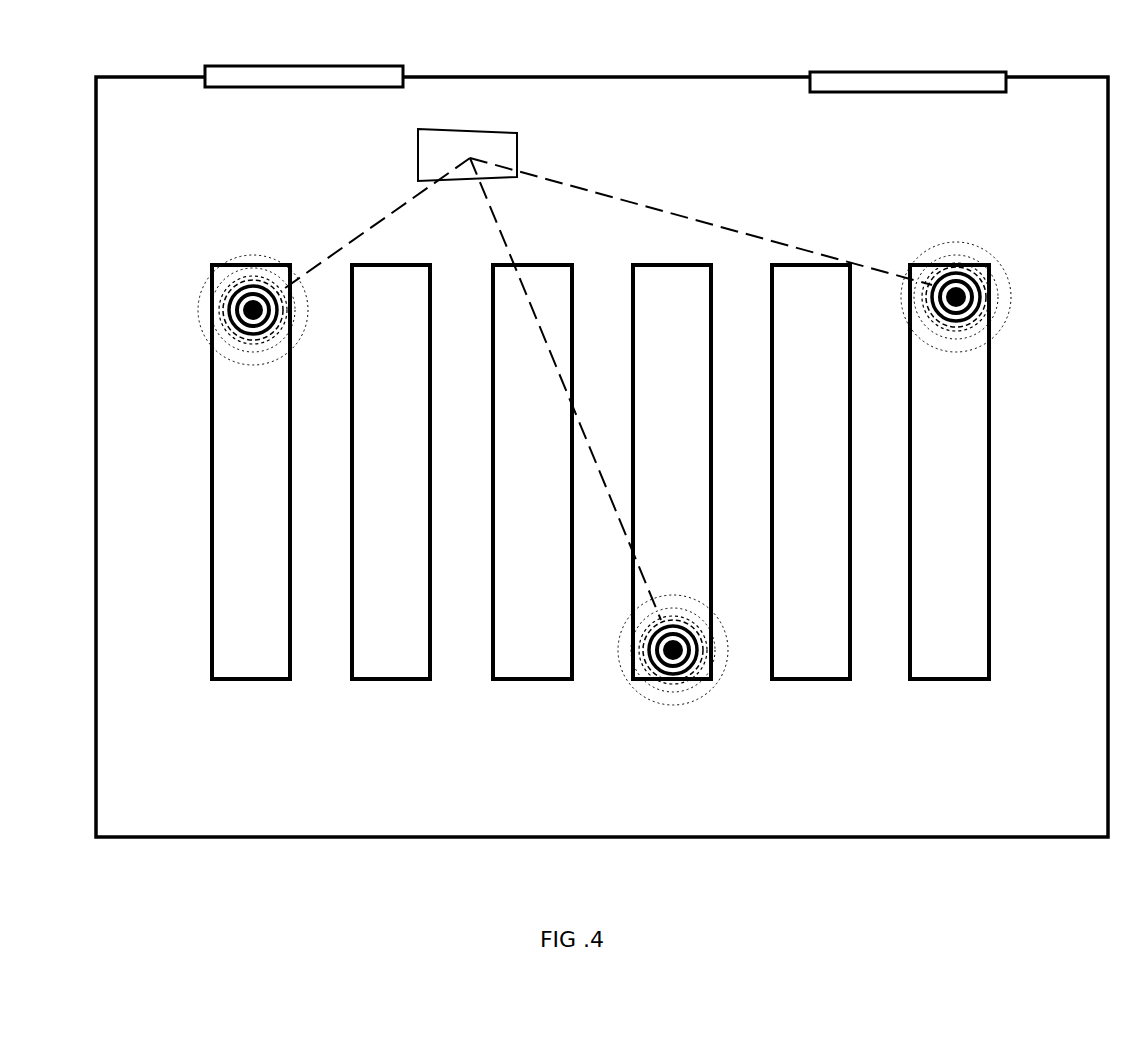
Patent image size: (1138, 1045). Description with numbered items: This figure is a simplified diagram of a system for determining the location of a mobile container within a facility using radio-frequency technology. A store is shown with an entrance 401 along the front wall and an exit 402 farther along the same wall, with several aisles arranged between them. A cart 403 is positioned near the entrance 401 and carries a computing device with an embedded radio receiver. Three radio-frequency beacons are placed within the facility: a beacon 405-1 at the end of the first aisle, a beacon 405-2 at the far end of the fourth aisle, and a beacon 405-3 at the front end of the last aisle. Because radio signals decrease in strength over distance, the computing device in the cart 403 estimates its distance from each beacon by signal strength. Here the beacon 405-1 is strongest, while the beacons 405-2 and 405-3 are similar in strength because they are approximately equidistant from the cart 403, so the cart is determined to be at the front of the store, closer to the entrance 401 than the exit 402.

The entrance 401 is at (283, 74).
The exit 402 is at (910, 80).
The cart 403 is at (470, 146).
The radio-frequency beacon 405-1 is at (242, 311).
The radio-frequency beacon 405-2 is at (673, 662).
The radio-frequency beacon 405-3 is at (970, 297).